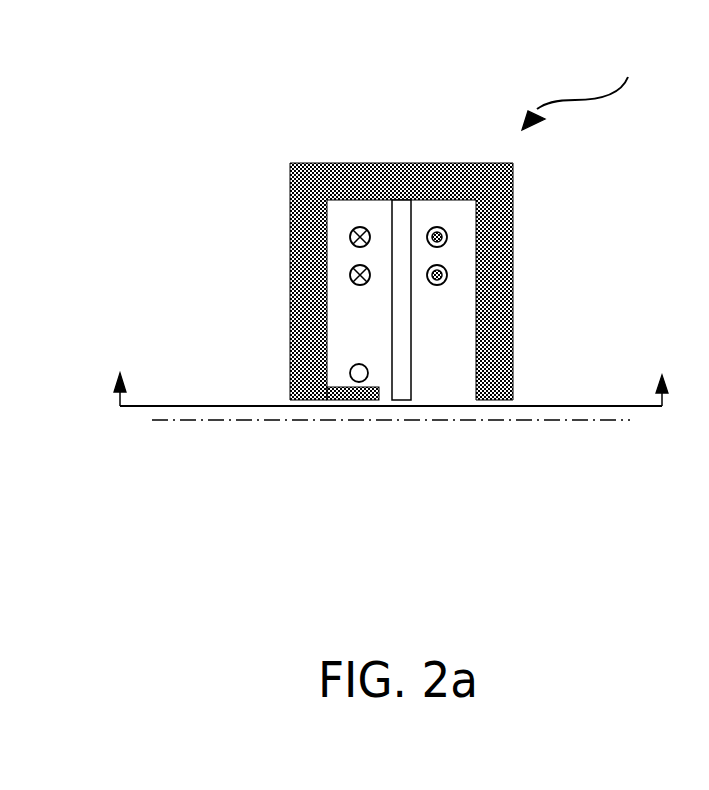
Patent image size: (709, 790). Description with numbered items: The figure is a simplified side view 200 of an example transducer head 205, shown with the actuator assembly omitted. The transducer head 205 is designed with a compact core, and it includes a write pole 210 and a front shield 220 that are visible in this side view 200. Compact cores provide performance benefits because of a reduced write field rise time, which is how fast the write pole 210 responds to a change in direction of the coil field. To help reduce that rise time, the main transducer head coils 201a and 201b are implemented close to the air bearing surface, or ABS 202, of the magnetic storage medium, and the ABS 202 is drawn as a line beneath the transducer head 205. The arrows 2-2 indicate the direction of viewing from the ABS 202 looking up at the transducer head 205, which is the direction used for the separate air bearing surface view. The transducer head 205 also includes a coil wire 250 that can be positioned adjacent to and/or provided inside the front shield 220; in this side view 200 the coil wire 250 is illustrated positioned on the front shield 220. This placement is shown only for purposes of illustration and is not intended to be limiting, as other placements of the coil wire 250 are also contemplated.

The simplified side view 200 is at (593, 89).
The transducer head 205 is at (310, 163).
The main transducer head coil 201a is at (352, 229).
The main transducer head coil 201b is at (352, 267).
The coil wire 250 is at (350, 366).
The front shield 220 is at (380, 388).
The write pole 210 is at (403, 400).
The air bearing surface (ABS) 202 is at (545, 420).
The arrows 2- 2 is at (148, 406).